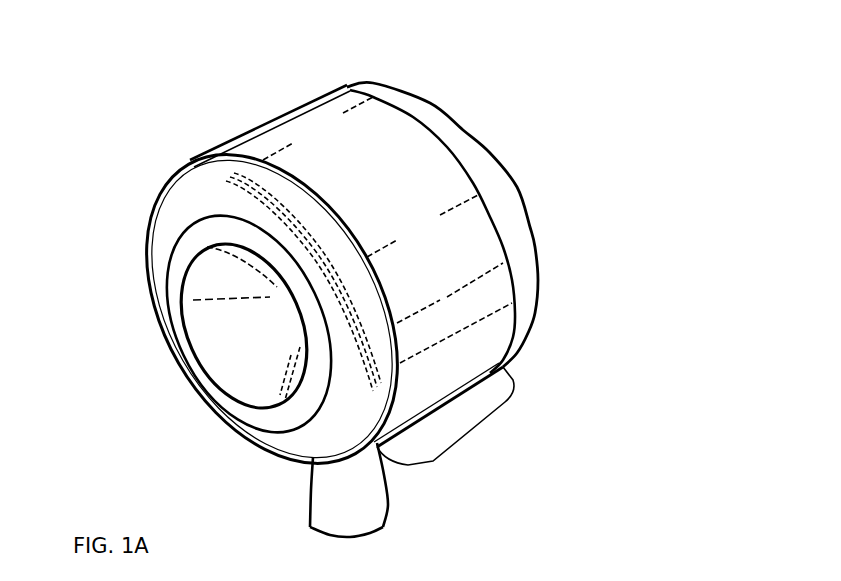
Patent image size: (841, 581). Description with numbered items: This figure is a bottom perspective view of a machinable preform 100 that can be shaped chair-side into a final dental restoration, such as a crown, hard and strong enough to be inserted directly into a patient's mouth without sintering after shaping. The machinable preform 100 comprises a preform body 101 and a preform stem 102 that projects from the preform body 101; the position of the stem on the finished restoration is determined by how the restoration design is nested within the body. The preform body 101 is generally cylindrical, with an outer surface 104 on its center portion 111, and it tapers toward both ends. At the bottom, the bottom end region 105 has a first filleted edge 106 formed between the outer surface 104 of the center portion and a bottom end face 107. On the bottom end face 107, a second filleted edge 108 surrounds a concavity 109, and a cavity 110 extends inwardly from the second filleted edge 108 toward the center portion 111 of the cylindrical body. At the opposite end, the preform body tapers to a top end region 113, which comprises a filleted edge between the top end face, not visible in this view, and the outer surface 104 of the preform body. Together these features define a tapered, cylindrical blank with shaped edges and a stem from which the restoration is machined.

The machinable preform 100 is at (500, 110).
The preform body 101 is at (347, 98).
The preform stem 102 is at (363, 480).
The outer surface 104 is at (443, 270).
The bottom end region 105 is at (190, 165).
The first filleted edge 106 is at (160, 207).
The bottom end face 107 is at (148, 253).
The second filleted edge 108 is at (173, 293).
The concavity 109 is at (173, 360).
The cavity 110 is at (277, 290).
The center portion 111 is at (477, 417).
The top end region 113 is at (493, 177).